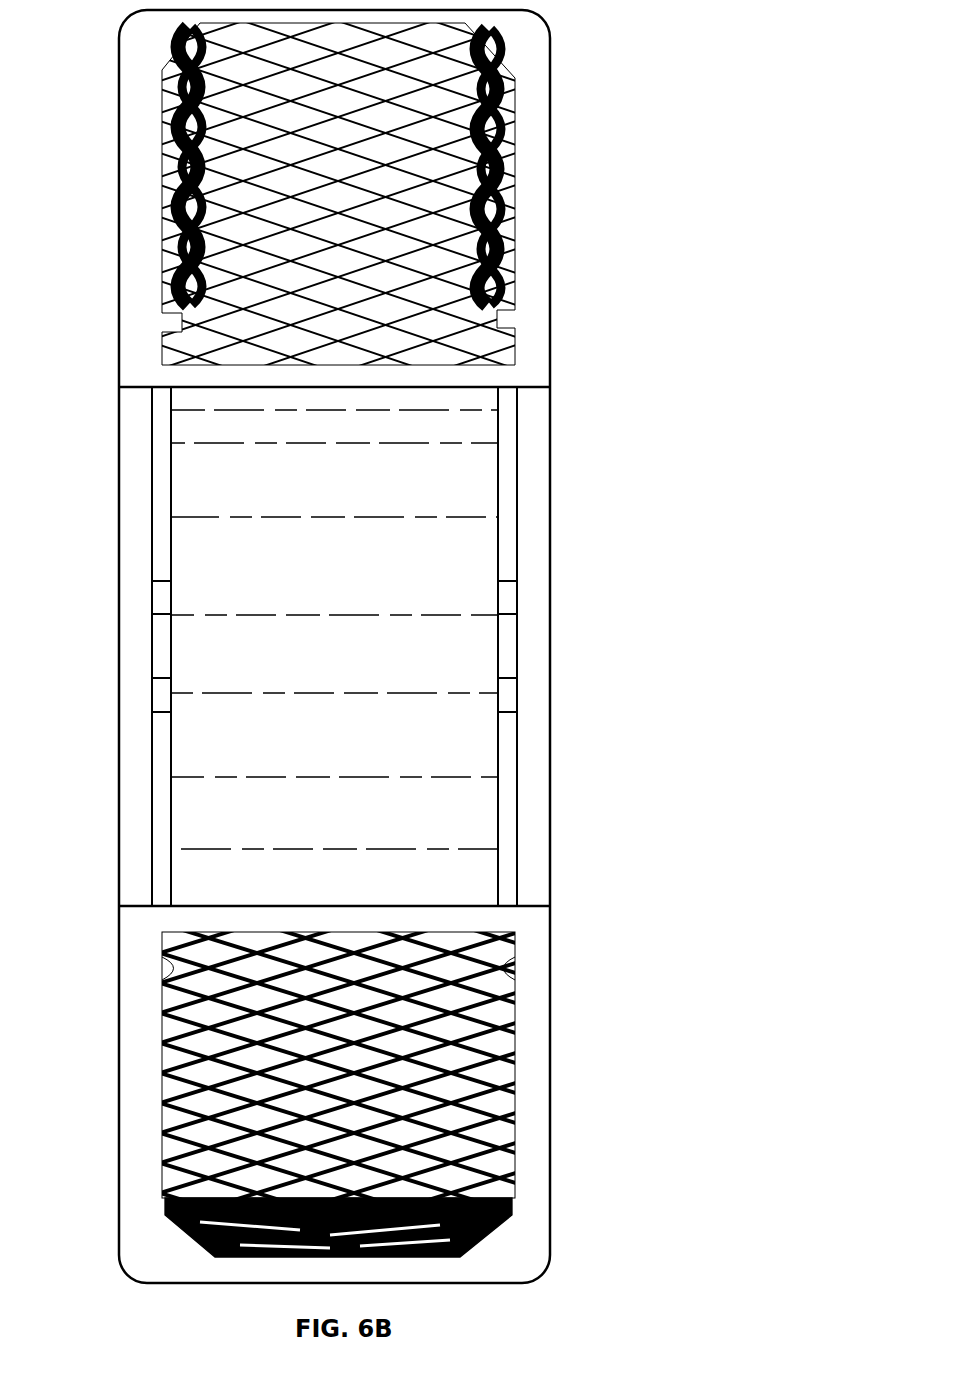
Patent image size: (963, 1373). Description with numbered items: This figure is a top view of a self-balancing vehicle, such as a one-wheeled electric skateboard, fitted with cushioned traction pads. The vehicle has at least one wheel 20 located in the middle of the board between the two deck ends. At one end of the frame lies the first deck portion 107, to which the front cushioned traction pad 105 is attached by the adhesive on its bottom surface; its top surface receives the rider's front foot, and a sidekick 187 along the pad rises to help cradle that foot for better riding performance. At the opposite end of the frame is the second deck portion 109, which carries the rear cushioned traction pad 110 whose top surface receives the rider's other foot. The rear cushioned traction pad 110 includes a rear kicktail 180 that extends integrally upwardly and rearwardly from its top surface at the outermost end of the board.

The wheel 20 is at (473, 737).
The front cushioned traction pad 105 is at (243, 200).
The first deck portion 107 is at (513, 52).
The second deck portion 109 is at (538, 1000).
The rear cushioned traction pad 110 is at (495, 1132).
The rear kicktail 180 is at (212, 1202).
The sidekick 187 is at (510, 163).